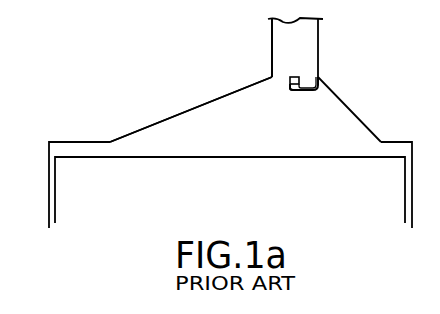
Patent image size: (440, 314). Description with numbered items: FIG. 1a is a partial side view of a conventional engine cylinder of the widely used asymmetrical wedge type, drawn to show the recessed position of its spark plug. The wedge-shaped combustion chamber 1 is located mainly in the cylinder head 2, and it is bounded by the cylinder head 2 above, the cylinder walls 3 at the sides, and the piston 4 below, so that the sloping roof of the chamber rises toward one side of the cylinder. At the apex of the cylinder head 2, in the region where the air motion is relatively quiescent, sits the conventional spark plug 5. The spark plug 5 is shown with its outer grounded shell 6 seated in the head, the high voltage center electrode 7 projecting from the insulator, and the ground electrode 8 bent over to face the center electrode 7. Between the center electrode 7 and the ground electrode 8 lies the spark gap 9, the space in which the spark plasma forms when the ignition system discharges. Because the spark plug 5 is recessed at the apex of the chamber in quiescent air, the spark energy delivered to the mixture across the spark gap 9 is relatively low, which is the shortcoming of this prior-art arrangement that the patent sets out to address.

The combustion chamber 1 is at (221, 135).
The cylinder head 2 is at (149, 121).
The cylinder walls 3 is at (41, 200).
The piston 4 is at (210, 192).
The spark plug 5 is at (322, 44).
The outer grounded shell 6 is at (272, 55).
The high voltage center electrode 7 is at (288, 81).
The ground electrode 8 is at (317, 91).
The spark gap 9 is at (293, 87).